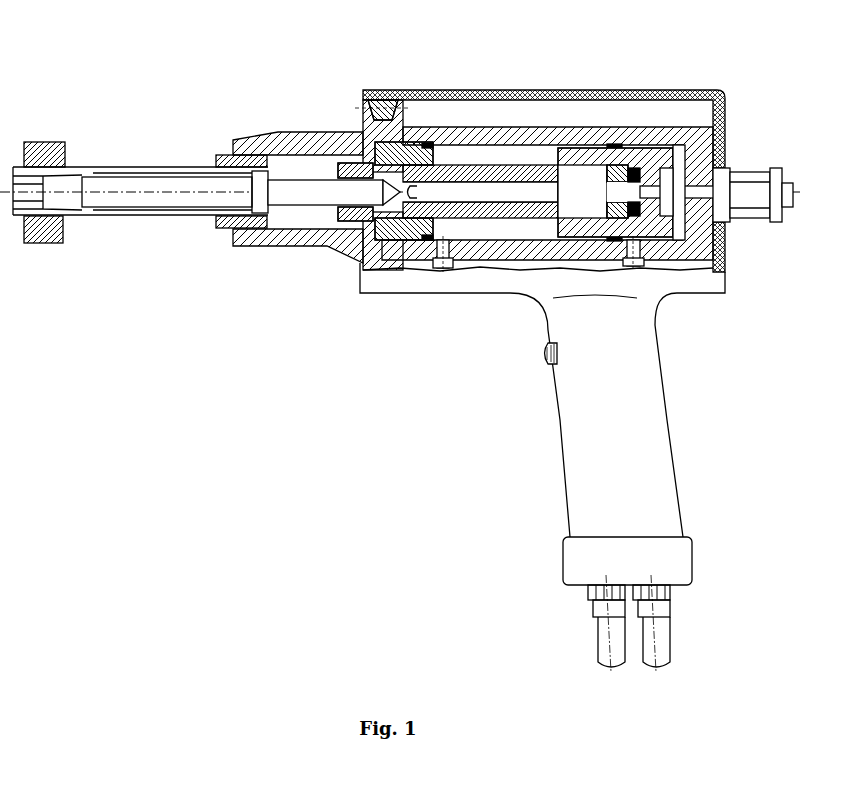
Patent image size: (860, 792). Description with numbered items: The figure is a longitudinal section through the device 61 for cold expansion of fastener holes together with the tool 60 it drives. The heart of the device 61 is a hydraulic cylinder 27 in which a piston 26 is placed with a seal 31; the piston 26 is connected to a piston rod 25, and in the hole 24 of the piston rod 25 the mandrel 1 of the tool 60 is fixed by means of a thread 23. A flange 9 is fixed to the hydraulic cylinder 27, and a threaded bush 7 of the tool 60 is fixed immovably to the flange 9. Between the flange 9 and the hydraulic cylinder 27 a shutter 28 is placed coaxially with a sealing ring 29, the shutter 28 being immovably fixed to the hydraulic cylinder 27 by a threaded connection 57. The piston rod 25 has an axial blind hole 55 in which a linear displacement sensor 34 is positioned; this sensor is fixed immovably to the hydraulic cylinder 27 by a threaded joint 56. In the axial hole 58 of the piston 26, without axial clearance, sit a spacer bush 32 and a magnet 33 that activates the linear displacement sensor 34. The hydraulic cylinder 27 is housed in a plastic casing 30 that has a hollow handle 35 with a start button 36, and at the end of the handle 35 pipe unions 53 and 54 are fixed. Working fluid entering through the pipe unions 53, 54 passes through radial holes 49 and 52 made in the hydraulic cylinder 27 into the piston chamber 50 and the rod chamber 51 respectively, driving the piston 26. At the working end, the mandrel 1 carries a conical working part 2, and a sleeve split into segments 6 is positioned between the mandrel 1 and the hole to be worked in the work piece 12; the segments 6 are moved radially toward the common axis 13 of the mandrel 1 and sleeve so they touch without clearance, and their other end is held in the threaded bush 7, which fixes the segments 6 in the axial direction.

The mandrel 1 is at (307, 180).
The conical working part 2 is at (57, 186).
The segments 6 is at (93, 170).
The threaded bush 7 is at (222, 155).
The flange 9 is at (277, 142).
The work piece 12 is at (47, 242).
The common axis 13 is at (102, 194).
The thread 23 is at (343, 221).
The hole 24 is at (367, 140).
The piston rod 25 is at (360, 263).
The piston 26 is at (583, 145).
The hydraulic cylinder 27 is at (476, 140).
The shutter 28 is at (404, 142).
The sealing ring 29 is at (427, 143).
The plastic casing 30 is at (622, 93).
The seal 31 is at (613, 145).
The spacer bush 32 is at (630, 173).
The magnet 33 is at (668, 173).
The linear displacement sensor 34 is at (740, 190).
The hollow handle 35 is at (650, 382).
The start button 36 is at (545, 360).
The radial hole 49 is at (640, 248).
The piston chamber 50 is at (714, 246).
The rod chamber 51 is at (493, 242).
The radial hole 52 is at (443, 252).
The pipe union 53 is at (662, 606).
The pipe union 54 is at (603, 611).
The axial blind hole 55 is at (403, 249).
The threaded joint 56 is at (707, 210).
The threaded connection 57 is at (389, 100).
The axial hole 58 is at (725, 127).
The tool 60 is at (147, 160).
The device 61 is at (525, 88).